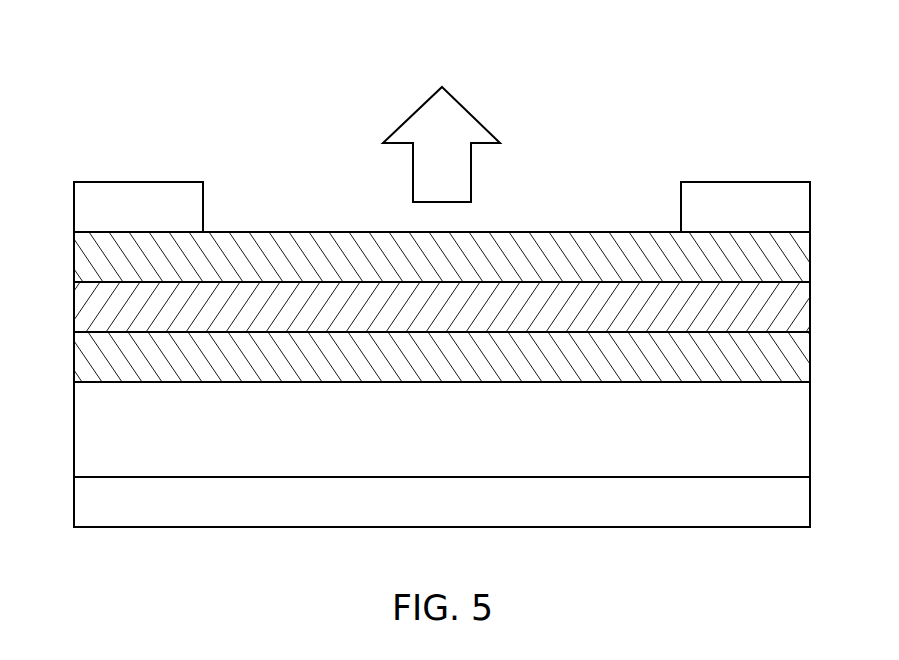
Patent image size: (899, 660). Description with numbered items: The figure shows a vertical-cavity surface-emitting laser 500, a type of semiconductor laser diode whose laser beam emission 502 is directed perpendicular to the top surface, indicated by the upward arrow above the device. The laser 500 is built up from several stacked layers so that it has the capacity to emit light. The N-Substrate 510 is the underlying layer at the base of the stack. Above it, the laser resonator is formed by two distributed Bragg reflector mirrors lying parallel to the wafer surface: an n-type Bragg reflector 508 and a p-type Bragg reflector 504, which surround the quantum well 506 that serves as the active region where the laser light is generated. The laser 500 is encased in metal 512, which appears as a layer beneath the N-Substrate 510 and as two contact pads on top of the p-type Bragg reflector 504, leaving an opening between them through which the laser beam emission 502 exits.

The laser 500 is at (442, 277).
The laser beam emission 502 is at (410, 116).
The p-type Bragg reflector 504 is at (803, 255).
The quantum well 506 is at (803, 309).
The n-type Bragg reflector 508 is at (803, 357).
The N-Substrate 510 is at (803, 430).
The metal 512 is at (81, 210).